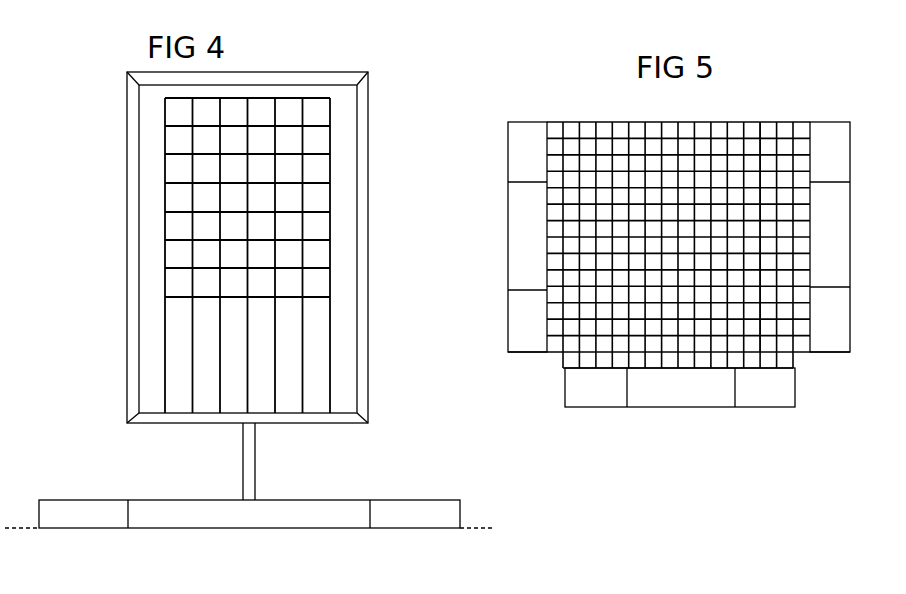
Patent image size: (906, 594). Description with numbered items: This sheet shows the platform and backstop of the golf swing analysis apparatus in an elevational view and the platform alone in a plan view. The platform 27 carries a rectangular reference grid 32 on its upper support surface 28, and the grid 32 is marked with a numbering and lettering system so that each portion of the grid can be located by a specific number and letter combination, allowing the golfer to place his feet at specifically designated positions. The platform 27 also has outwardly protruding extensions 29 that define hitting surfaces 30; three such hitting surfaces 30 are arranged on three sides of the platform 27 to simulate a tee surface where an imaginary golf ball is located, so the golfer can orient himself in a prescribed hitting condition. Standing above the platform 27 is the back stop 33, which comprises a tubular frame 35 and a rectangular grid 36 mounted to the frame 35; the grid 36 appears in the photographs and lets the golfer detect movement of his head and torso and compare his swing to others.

In FIG. 4, the platform 27 is at (463, 507).
In FIG. 5, the platform 27 is at (678, 407).
In FIG. 4, the upper support surface 28 is at (356, 497).
In FIG. 5, the upper support surface 28 is at (622, 125).
In FIG. 4, the outwardly protruding extensions 29 is at (70, 525).
In FIG. 5, the outwardly protruding extensions 29 is at (522, 346).
In FIG. 5, the hitting surfaces 30 is at (512, 244).
In FIG. 5, the rectangular reference grid 32 is at (758, 125).
In FIG. 4, the back stop 33 is at (127, 382).
In FIG. 4, the tubular frame 35 is at (242, 444).
In FIG. 4, the rectangular grid 36 is at (170, 264).